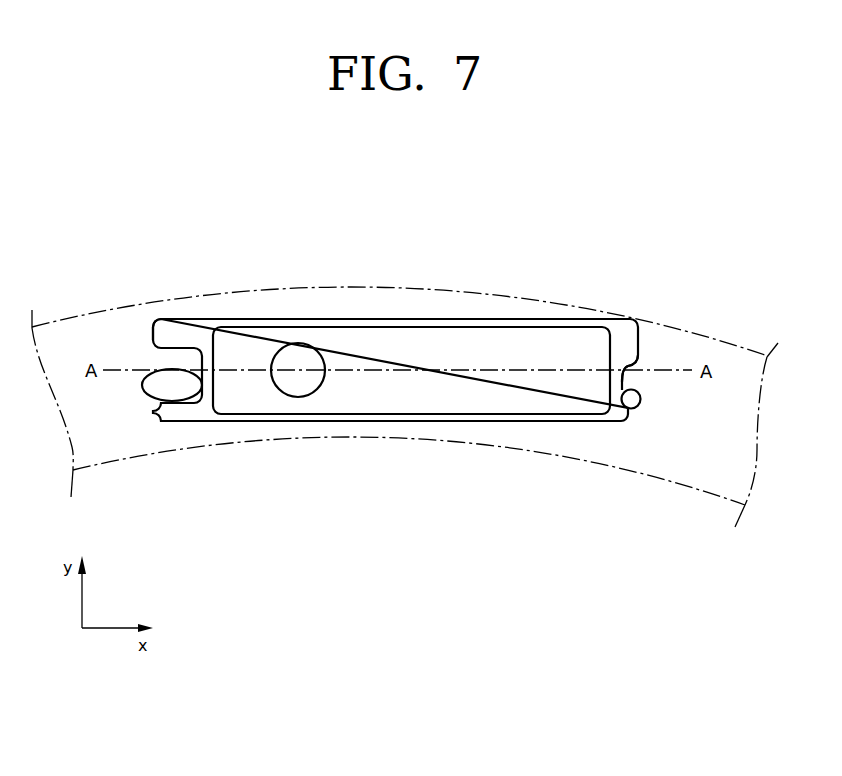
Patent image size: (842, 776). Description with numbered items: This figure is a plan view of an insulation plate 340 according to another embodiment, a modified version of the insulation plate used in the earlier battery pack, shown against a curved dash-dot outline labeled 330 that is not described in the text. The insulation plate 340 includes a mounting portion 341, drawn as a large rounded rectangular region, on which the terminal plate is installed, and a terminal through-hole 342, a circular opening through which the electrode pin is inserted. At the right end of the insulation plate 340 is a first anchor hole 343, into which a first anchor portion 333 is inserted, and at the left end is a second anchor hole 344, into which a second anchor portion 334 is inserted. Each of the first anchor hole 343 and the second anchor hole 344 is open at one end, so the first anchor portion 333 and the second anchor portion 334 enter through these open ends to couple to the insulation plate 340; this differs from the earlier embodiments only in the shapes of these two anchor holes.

The housing / curved member 330 is at (368, 287).
The insulation plate 340 is at (550, 263).
The mounting portion 341 is at (427, 395).
The terminal through-hole 342 is at (300, 387).
The first anchor hole 343 is at (623, 378).
The second anchor hole 344 is at (176, 402).
The second anchor portion 334 is at (172, 380).
The first anchor portion 333 is at (637, 400).